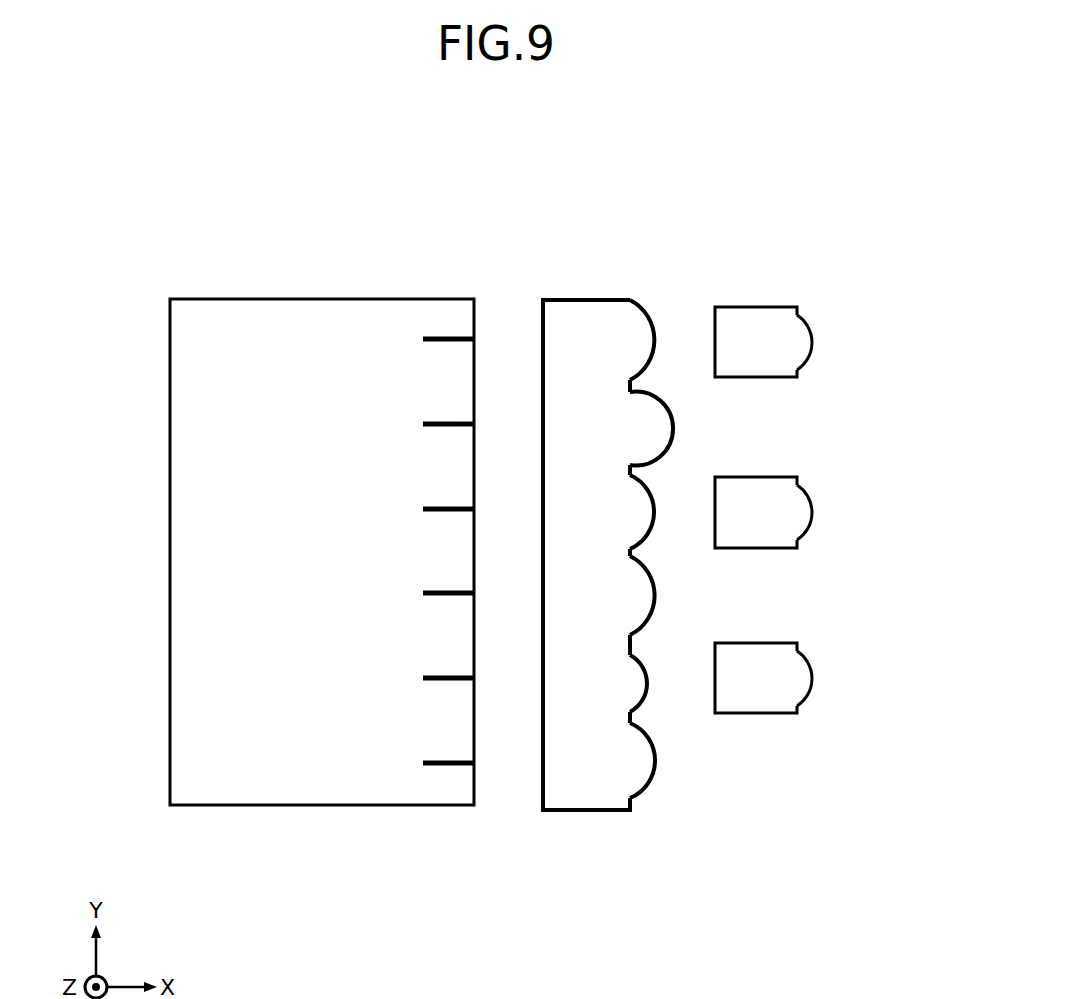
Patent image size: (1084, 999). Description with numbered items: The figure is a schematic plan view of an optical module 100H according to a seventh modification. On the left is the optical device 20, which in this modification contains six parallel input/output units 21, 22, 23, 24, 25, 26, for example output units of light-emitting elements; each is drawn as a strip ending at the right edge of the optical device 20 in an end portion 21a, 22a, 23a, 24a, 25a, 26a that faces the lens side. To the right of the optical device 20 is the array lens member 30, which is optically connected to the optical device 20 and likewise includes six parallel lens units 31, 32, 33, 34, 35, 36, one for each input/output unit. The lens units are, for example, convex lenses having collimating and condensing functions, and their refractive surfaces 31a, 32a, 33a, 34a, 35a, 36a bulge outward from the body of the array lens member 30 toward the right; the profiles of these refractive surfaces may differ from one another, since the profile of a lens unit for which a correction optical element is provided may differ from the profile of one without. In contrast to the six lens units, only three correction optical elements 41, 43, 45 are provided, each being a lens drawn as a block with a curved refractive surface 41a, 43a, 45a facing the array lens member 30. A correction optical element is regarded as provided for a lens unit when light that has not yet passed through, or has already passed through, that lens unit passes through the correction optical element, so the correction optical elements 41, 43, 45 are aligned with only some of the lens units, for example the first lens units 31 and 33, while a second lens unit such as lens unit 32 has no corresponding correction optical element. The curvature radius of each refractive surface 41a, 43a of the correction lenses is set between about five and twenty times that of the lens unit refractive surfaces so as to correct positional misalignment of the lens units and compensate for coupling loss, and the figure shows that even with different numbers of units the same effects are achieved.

The optical module 100H is at (810, 183).
The optical device 20 is at (235, 287).
The input/output unit 21 is at (433, 342).
The input/output unit 22 is at (433, 427).
The input/output unit 23 is at (433, 512).
The input/output unit 24 is at (433, 596).
The input/output unit 25 is at (433, 681).
The input/output unit 26 is at (433, 766).
The emission end face 21a is at (474, 339).
The emission end face 22a is at (474, 424).
The emission end face 23a is at (474, 509).
The emission end face 24a is at (474, 593).
The emission end face 25a is at (474, 678).
The emission end face 26a is at (474, 763).
The array lens member 30 is at (570, 288).
The lens unit 31 is at (642, 340).
The lens unit 32 is at (652, 427).
The lens unit 33 is at (637, 505).
The lens unit 34 is at (638, 600).
The lens unit 35 is at (632, 678).
The lens unit 36 is at (637, 760).
The refractive surface 31a is at (654, 340).
The refractive surface 32a is at (670, 417).
The refractive surface 33a is at (652, 525).
The lens surface 34a is at (652, 580).
The lens surface 35a is at (645, 692).
The lens surface 36a is at (645, 775).
The correction optical element 41 is at (820, 322).
The correction optical element 43 is at (820, 522).
The correction optical element 45 is at (820, 694).
The refractive surface 41a is at (811, 345).
The refractive surface 43a is at (811, 503).
The incident end face 45a is at (811, 670).